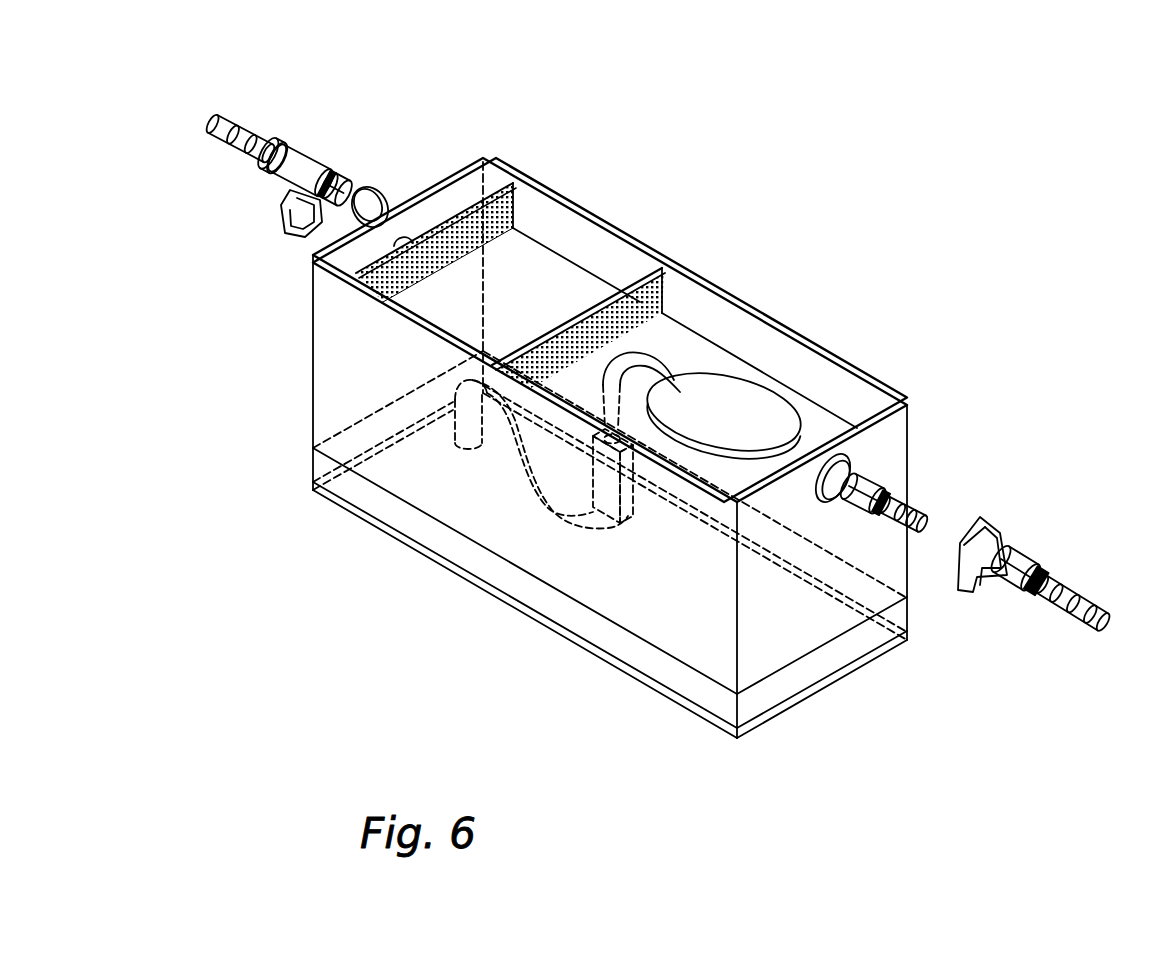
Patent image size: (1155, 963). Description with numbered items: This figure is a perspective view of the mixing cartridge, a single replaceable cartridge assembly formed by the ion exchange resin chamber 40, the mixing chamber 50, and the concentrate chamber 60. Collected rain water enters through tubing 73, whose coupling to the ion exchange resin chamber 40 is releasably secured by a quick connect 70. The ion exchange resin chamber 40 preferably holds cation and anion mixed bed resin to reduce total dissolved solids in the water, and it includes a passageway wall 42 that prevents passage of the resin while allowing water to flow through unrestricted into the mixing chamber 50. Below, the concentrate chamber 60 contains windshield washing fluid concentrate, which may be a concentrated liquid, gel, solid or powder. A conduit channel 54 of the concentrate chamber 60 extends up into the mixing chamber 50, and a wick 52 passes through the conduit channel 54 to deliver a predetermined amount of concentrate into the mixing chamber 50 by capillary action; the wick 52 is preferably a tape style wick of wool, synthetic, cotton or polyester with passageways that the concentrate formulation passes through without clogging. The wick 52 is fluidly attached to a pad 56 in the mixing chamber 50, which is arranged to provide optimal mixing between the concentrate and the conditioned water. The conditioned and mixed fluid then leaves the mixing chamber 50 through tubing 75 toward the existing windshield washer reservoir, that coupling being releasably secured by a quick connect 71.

The ion exchange resin chamber 40 is at (512, 268).
The passageway wall 42 is at (653, 282).
The mixing chamber 50 is at (731, 304).
The wick 52 is at (533, 483).
The conduit channel 54 is at (602, 483).
The pad 56 is at (778, 428).
The concentrate chamber 60 is at (425, 470).
The quick connect 70 is at (283, 181).
The quick connect 71 is at (1028, 558).
The tubing 73 is at (249, 118).
The tubing 75 is at (1073, 613).